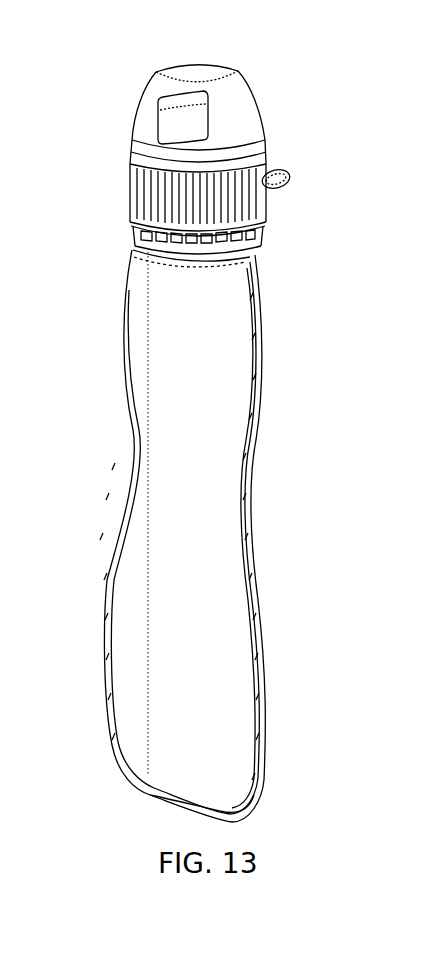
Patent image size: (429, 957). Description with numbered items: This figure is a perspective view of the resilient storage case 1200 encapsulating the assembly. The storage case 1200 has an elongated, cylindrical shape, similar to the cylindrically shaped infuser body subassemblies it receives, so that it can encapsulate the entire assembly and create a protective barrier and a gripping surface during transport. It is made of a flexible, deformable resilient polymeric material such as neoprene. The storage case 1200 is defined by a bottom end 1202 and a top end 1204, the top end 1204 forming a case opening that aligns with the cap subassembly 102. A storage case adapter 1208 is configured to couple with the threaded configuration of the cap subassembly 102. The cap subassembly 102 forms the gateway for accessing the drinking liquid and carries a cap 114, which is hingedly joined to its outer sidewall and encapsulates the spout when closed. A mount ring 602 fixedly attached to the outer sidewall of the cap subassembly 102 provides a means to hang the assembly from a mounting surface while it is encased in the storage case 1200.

The cap 114 is at (240, 73).
The cap subassembly 102 is at (256, 116).
The mount ring 602 is at (273, 182).
The storage case adapter 1208 is at (131, 203).
The top end 1204 is at (270, 268).
The resilient storage case 1200 is at (270, 392).
The bottom end 1202 is at (262, 823).